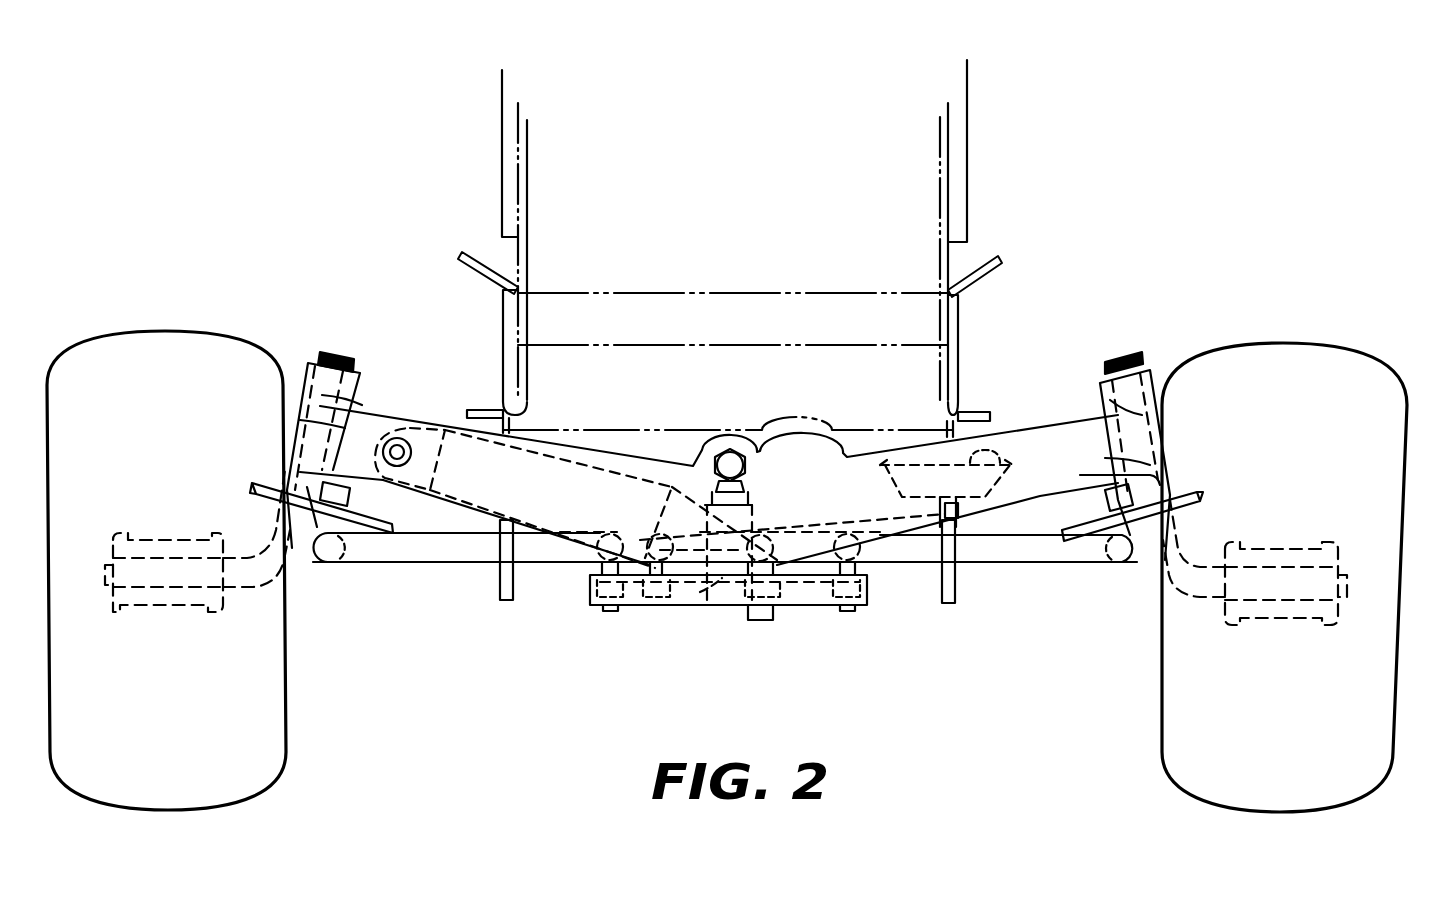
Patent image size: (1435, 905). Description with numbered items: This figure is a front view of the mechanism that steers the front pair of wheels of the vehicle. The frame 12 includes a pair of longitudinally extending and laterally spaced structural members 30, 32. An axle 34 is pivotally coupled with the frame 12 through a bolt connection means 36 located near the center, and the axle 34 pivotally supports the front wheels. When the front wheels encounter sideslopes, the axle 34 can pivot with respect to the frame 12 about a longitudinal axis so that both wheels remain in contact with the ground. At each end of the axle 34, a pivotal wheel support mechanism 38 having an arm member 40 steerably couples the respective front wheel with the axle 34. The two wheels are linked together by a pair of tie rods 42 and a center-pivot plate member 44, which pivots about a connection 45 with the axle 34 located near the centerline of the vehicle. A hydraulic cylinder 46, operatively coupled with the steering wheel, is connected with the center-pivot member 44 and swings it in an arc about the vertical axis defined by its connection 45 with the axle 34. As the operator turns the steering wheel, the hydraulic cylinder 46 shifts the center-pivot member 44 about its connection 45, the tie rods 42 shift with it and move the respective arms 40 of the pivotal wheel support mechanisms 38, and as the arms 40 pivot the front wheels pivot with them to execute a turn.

The frame 12 is at (500, 342).
The structural member 30 is at (460, 260).
The structural member 32 is at (996, 262).
The axle 34 is at (1072, 414).
The bolt connection means 36 is at (745, 466).
The pivotal wheel support mechanism 38 is at (310, 364).
The arm member 40 is at (356, 542).
The tie rod 42 is at (392, 563).
The center-pivot plate member 44 is at (808, 606).
The connection 45 is at (700, 592).
The hydraulic cylinder 46 is at (650, 470).